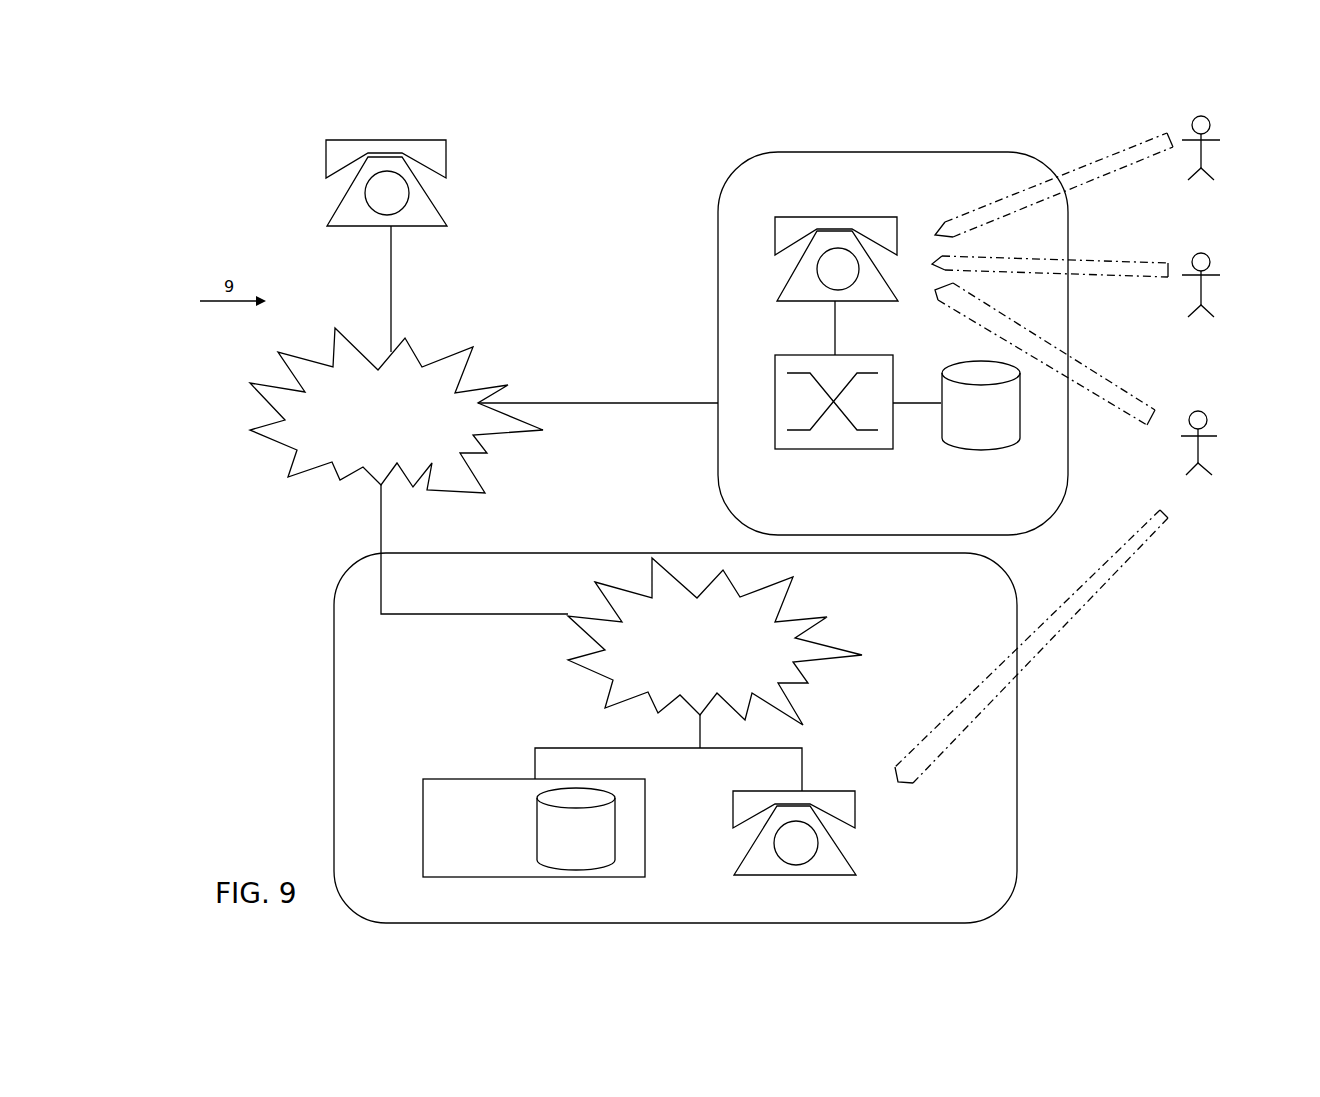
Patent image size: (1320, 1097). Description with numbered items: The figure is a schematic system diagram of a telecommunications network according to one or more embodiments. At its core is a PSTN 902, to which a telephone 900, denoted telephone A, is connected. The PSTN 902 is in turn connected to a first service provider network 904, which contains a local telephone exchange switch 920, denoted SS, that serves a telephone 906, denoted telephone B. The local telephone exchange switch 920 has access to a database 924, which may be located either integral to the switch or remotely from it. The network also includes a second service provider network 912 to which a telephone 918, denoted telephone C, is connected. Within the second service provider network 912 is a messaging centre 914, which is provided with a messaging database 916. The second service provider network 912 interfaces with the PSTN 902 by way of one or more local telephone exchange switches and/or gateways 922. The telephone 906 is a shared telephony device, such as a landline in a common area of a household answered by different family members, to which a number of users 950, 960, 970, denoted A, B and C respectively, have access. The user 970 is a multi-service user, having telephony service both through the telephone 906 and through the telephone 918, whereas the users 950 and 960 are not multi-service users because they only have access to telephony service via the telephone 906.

The telephone 900 is at (352, 227).
The PSTN 902 is at (468, 471).
The first service provider network 904 is at (865, 326).
The telephone 906 is at (853, 265).
The second service provider network 912 is at (714, 738).
The messaging centre 914 is at (534, 811).
The messaging database 916 is at (590, 852).
The telephone 918 is at (833, 835).
The local telephone exchange switch 920 is at (858, 427).
The local telephone exchange switches and/or gateways 922 is at (725, 674).
The database 924 is at (989, 425).
The user 950 is at (1230, 176).
The user 960 is at (1230, 312).
The user 970 is at (1227, 479).